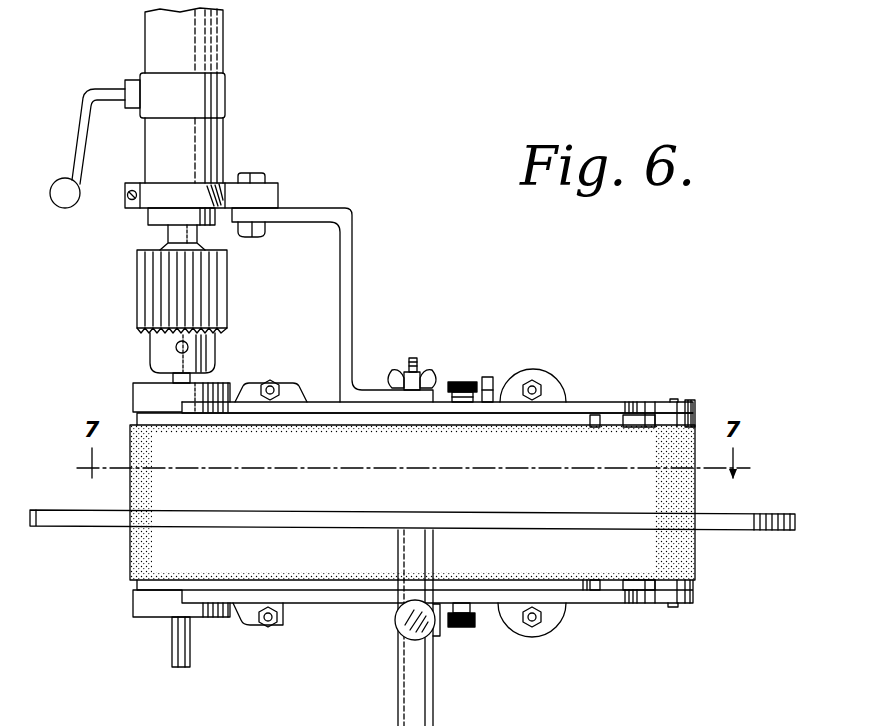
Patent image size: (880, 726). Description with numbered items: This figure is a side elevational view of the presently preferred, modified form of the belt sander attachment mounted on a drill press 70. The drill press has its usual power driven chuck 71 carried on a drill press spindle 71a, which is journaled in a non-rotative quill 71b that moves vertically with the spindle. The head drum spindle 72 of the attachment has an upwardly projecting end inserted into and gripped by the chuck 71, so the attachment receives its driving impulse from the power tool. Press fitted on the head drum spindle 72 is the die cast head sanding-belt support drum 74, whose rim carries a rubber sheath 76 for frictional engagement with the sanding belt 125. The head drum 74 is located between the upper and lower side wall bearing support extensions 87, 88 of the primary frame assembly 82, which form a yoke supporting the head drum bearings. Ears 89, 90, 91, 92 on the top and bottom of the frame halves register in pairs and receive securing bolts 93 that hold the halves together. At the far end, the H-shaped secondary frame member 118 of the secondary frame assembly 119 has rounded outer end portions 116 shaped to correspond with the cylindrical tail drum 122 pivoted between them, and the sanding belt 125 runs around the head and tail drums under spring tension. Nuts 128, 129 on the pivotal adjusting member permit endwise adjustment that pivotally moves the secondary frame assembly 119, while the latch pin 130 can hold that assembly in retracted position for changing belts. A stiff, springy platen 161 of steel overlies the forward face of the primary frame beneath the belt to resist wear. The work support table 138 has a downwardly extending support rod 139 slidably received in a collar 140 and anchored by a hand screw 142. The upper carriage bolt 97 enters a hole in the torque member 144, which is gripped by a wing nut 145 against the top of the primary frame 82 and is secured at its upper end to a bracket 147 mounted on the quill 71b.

The drill press 70 is at (230, 135).
The bracket 147 is at (273, 193).
The torque member 144 is at (343, 258).
The quill 71b is at (150, 216).
The drill press spindle 71a is at (167, 233).
The chuck 71 is at (137, 300).
The head drum spindle 72 is at (173, 378).
The upper side wall bearing support extension 87 is at (133, 393).
The H-shaped secondary frame member 118 is at (640, 410).
The secondary frame assembly 119 is at (654, 398).
The outer end portions 116 is at (694, 404).
The tail drum 122 is at (698, 421).
The ear 89 is at (292, 395).
The securing bolts 93 is at (268, 381).
The wing nut 145 is at (392, 372).
The upper carriage bolt 97 is at (420, 362).
The nut 128 is at (449, 381).
The latch pin 130 is at (488, 376).
The ear 90 is at (520, 380).
The sanding belt 125 is at (570, 428).
The work support table 138 is at (748, 530).
The head sanding-belt support drum 74 is at (135, 583).
The lower side wall bearing support extension 88 is at (137, 612).
The rubber sheath 76 is at (202, 671).
The ear 91 is at (283, 626).
The primary frame assembly 82 is at (330, 606).
The support rod 139 is at (434, 711).
The collar 140 is at (395, 625).
The hand screw 142 is at (438, 629).
The nut 129 is at (476, 618).
The ear 92 is at (553, 616).
The platen 161 is at (586, 586).